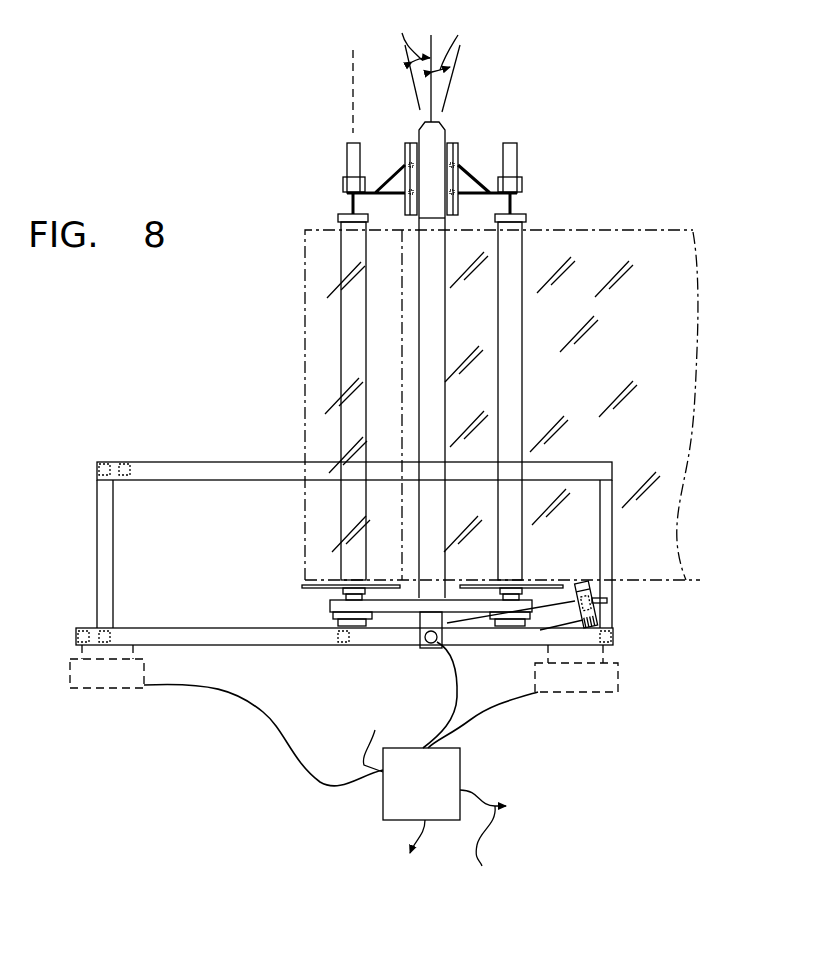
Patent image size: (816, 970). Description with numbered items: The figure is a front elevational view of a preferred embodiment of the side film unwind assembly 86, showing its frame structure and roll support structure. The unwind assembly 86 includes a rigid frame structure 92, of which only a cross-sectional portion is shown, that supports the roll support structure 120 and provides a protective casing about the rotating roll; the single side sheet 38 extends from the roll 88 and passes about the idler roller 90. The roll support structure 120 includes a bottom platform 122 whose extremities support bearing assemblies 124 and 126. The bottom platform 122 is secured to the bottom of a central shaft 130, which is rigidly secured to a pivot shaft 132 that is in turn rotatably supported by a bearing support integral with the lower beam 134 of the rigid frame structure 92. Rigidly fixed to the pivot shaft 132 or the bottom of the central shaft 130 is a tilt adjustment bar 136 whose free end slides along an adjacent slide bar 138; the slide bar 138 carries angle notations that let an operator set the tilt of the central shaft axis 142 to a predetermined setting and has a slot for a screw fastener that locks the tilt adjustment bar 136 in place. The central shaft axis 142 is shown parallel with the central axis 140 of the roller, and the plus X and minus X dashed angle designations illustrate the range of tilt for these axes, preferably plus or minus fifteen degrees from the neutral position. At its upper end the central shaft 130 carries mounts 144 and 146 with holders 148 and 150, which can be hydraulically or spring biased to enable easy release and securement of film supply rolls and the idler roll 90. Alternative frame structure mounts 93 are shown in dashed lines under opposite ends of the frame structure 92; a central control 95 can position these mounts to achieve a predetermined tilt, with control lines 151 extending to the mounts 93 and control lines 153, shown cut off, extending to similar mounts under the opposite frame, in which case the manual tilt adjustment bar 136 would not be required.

The single side sheet 38 is at (647, 232).
The side film unwind assembly 86 is at (188, 453).
The roll 88 is at (309, 321).
The idler roller 90 is at (519, 248).
The rigid frame structure 92 is at (156, 632).
The alternative frame structure mounts 93 is at (95, 692).
The central control 95 is at (384, 800).
The roll support structure 120 is at (446, 131).
The bottom platform 122 is at (380, 609).
The bearing assembly 124 is at (343, 594).
The bearing assembly 126 is at (522, 592).
The central shaft 130 is at (425, 617).
The pivot shaft 132 is at (457, 706).
The lower beam 134 is at (279, 643).
The tilt adjustment bar 136 is at (562, 617).
The slide bar 138 is at (589, 585).
The central axis of the roller 140 is at (352, 75).
The central shaft axis 142 is at (431, 92).
The mount 144 is at (517, 147).
The mount 146 is at (346, 147).
The holder 148 is at (518, 213).
The holder 150 is at (340, 217).
The control lines 151 is at (432, 736).
The control lines 153 is at (428, 833).